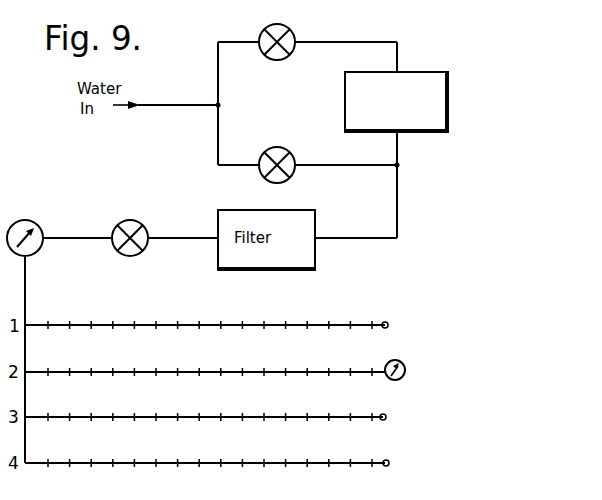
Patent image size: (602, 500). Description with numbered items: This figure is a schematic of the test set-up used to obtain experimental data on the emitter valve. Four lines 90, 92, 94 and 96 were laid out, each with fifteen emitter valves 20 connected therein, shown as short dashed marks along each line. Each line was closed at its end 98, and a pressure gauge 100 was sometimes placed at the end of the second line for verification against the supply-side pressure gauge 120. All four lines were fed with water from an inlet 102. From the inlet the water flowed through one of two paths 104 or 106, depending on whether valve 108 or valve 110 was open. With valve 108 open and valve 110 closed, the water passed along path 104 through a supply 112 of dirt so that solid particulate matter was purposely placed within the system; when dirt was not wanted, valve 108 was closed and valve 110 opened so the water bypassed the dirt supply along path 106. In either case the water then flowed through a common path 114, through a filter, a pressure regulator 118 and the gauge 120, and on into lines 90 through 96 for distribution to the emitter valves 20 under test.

The emitter valve 20 is at (308, 322).
The first line 90 is at (37, 324).
The second line 92 is at (38, 371).
The third line 94 is at (78, 415).
The fourth line 96 is at (78, 461).
The line ends 98 is at (384, 321).
The pressure gauge 100 is at (404, 368).
The inlet 102 is at (180, 104).
The first path 104 is at (330, 43).
The second path 106 is at (322, 164).
The valve 108 is at (266, 31).
The valve 110 is at (264, 149).
The supply of dirt 112 is at (421, 85).
The path 114 is at (397, 188).
The pressure regulator 118 is at (145, 229).
The pressure gauge 120 is at (37, 229).